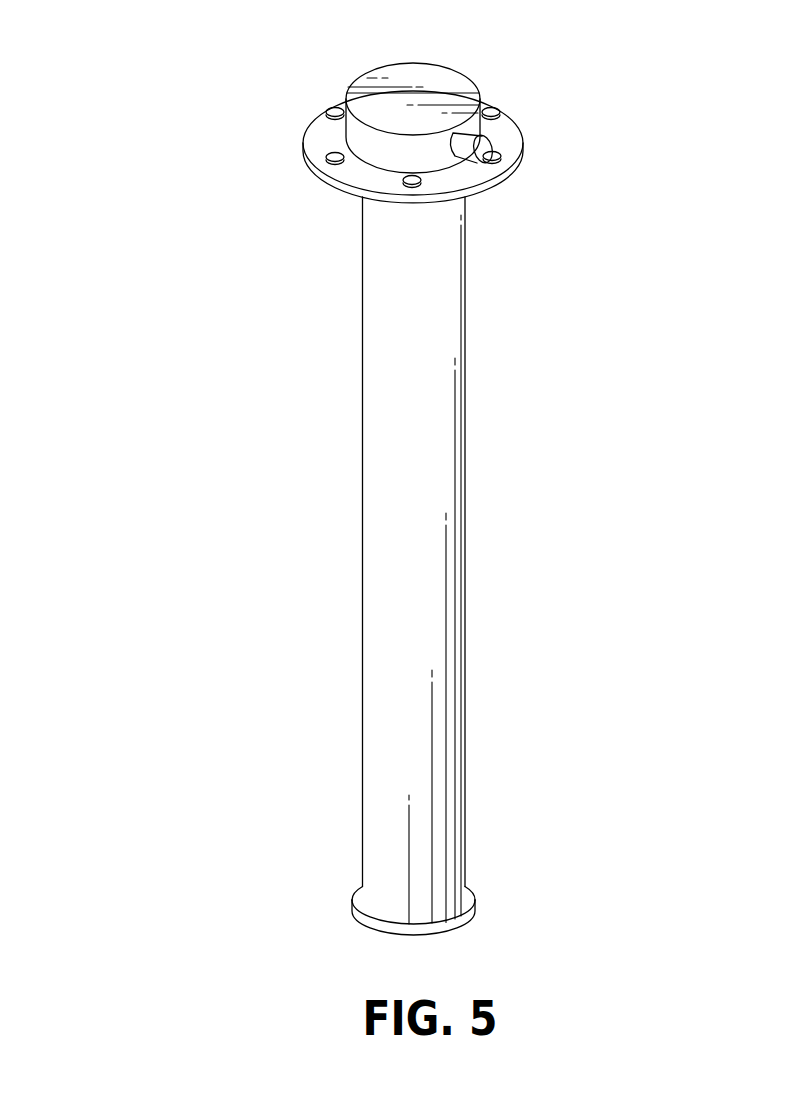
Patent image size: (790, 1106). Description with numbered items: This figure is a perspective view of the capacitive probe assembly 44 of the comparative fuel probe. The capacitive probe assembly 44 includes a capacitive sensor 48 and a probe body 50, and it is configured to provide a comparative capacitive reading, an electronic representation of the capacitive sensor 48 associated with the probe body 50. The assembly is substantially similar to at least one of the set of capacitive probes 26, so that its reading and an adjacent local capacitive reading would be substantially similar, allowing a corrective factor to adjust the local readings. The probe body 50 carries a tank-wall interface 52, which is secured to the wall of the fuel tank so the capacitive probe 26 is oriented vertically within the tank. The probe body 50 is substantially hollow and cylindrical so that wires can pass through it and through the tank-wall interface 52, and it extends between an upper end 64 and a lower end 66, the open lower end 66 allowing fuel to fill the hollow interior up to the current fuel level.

The capacitive probe 26 is at (90, 347).
The capacitive probe assembly 44 is at (116, 207).
The capacitive sensor 48 is at (427, 82).
The probe body 50 is at (363, 288).
The tank-wall interface 52 is at (510, 132).
The upper end 64 is at (492, 297).
The lower end 66 is at (500, 850).